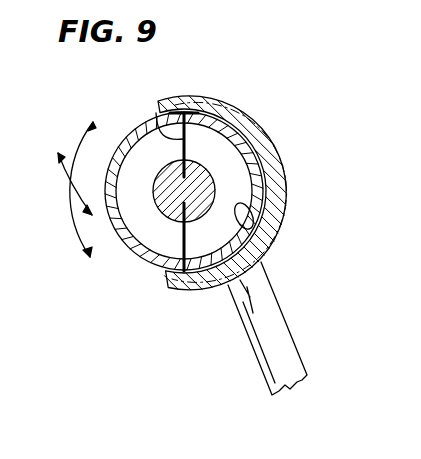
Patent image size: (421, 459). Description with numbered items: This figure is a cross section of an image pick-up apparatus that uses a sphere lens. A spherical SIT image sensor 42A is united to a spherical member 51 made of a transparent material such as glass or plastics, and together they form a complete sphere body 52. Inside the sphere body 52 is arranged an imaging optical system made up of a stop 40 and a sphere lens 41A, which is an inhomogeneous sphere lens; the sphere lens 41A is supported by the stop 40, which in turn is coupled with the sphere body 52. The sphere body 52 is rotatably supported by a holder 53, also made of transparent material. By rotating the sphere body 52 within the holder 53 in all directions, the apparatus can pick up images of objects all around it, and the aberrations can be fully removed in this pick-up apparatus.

The stop 40 is at (165, 113).
The sphere lens 41A is at (157, 174).
The spherical SIT image sensor 42A is at (272, 233).
The spherical member 51 is at (125, 245).
The sphere body 52 is at (143, 265).
The holder 53 is at (288, 184).